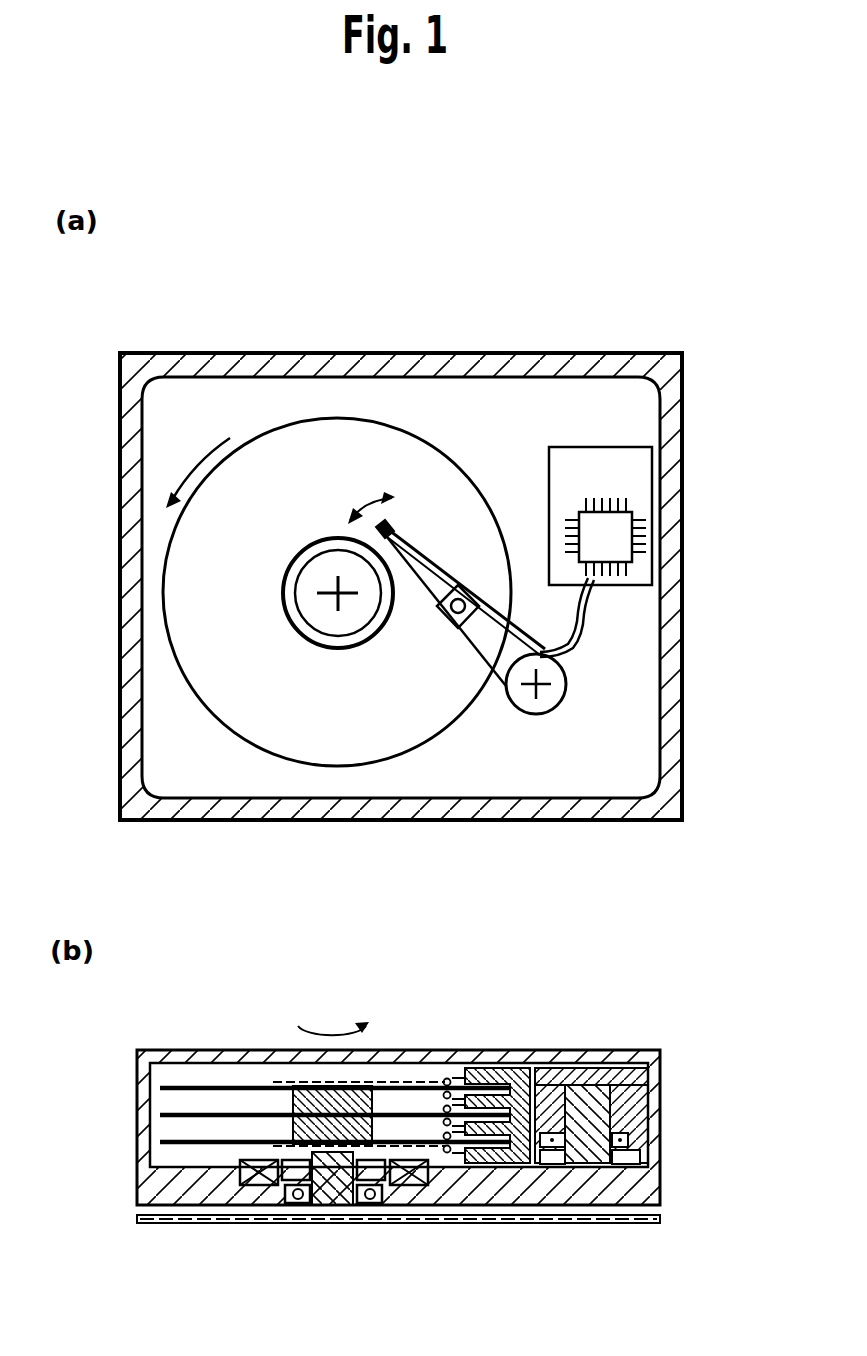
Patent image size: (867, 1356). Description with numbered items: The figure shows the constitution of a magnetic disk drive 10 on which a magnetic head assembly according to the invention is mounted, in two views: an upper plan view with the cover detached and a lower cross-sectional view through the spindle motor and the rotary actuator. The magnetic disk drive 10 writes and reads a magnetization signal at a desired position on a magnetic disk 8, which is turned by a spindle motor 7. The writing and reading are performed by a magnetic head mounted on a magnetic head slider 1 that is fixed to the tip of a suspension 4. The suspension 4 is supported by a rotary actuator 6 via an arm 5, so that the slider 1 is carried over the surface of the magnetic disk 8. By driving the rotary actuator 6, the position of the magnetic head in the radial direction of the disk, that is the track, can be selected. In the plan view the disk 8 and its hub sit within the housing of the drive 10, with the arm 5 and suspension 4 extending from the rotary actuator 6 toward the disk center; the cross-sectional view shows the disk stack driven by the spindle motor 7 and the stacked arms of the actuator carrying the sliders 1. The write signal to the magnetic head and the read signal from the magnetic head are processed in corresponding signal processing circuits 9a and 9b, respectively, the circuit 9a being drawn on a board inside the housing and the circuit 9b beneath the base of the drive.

The magnetic head slider 1 is at (395, 524).
The suspension 4 is at (414, 577).
The arm 5 is at (492, 648).
The rotary actuator 6 is at (548, 714).
The spindle motor 7 is at (334, 1206).
The magnetic disk 8 is at (307, 445).
The signal processing circuit 9a is at (615, 525).
The signal processing circuit 9b is at (570, 1224).
The magnetic disk drive 10 is at (470, 348).